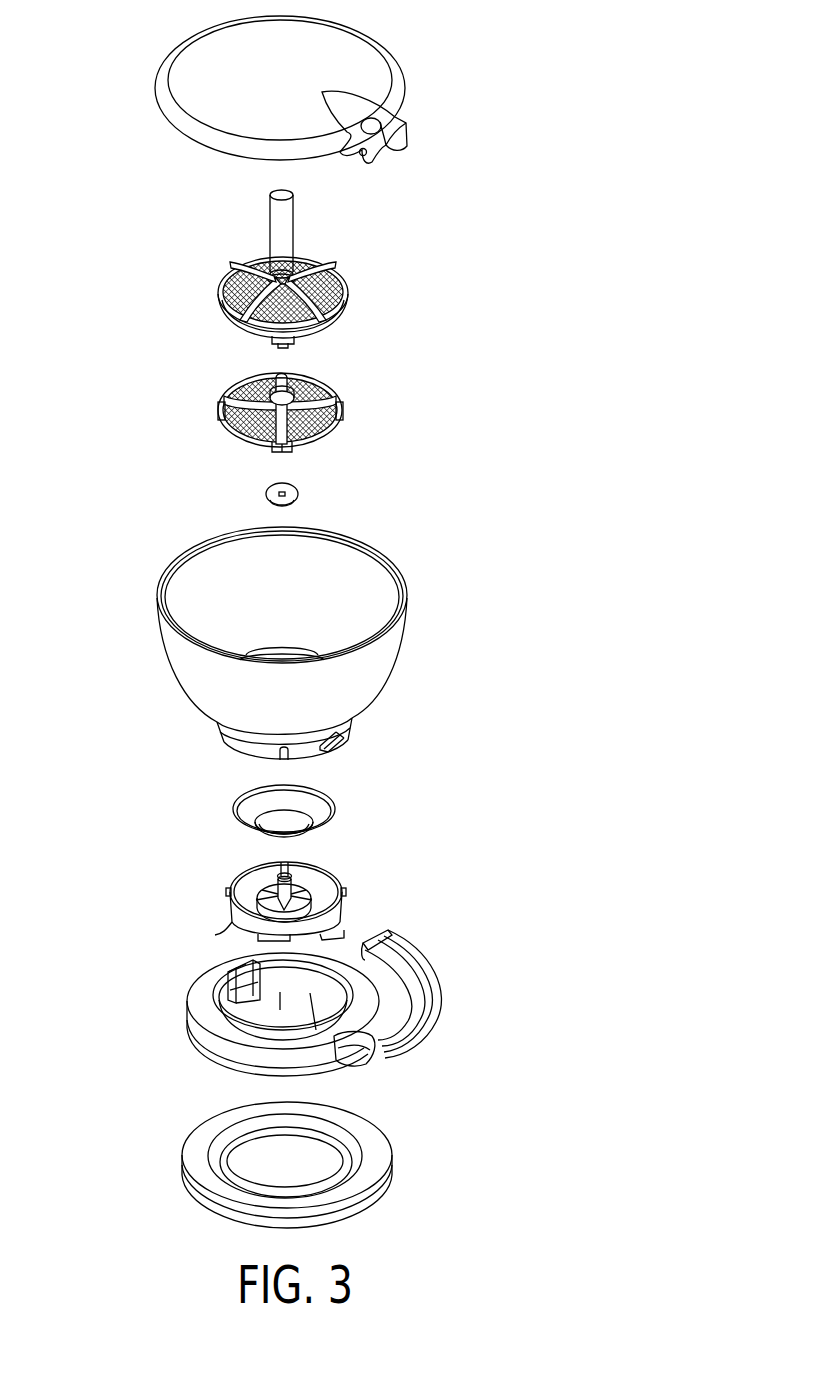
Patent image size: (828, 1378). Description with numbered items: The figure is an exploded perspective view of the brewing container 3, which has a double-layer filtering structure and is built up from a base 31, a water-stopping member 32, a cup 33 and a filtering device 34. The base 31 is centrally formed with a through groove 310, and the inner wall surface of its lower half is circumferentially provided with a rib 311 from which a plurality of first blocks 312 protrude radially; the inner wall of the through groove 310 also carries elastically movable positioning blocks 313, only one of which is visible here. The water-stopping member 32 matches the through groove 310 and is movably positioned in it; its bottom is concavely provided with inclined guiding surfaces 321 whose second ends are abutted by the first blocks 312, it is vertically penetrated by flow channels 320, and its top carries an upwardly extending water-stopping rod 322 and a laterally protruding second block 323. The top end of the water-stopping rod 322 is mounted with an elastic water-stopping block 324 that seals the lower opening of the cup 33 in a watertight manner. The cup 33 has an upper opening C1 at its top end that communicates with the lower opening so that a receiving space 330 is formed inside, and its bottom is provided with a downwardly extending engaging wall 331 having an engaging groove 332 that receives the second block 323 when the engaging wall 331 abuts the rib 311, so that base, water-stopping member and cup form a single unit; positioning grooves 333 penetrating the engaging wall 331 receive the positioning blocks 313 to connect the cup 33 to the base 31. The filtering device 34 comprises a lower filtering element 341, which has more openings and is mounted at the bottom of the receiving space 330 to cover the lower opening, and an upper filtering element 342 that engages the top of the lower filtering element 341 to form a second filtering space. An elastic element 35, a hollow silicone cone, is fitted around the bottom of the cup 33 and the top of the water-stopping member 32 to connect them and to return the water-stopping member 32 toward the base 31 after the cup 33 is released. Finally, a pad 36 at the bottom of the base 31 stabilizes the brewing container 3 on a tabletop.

The brewing container 3 is at (549, 182).
The filtering device 34 is at (427, 293).
The upper filtering element 342 is at (342, 314).
The lower filtering element 341 is at (342, 396).
The water-stopping block 324 is at (298, 492).
The cup 33 is at (380, 668).
The upper opening C1 is at (405, 586).
The receiving space 330 is at (188, 552).
The engaging wall 331 is at (222, 730).
The engaging groove 332 is at (283, 760).
The positioning groove 333 is at (345, 745).
The elastic element 35 is at (318, 808).
The water-stopping member 32 is at (345, 892).
The flow channels 320 is at (338, 877).
The water-stopping rod 322 is at (266, 880).
The second block 323 is at (230, 890).
The inclined guiding surfaces 321 is at (307, 947).
The base 31 is at (428, 1003).
The through groove 310 is at (233, 1024).
The rib 311 is at (355, 1046).
The first blocks 312 is at (275, 1000).
The positioning block 313 is at (243, 975).
The pad 36 is at (200, 1162).